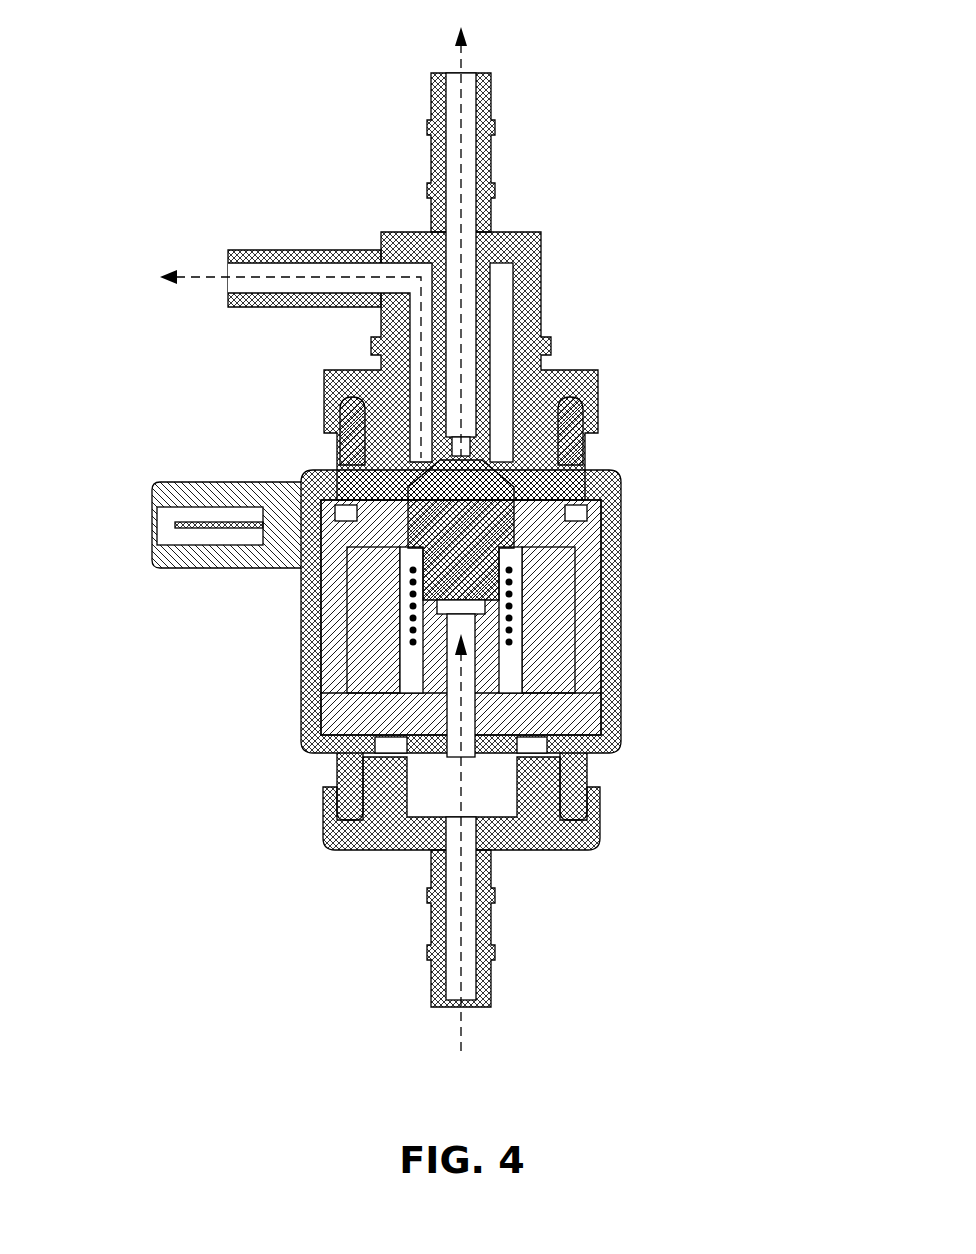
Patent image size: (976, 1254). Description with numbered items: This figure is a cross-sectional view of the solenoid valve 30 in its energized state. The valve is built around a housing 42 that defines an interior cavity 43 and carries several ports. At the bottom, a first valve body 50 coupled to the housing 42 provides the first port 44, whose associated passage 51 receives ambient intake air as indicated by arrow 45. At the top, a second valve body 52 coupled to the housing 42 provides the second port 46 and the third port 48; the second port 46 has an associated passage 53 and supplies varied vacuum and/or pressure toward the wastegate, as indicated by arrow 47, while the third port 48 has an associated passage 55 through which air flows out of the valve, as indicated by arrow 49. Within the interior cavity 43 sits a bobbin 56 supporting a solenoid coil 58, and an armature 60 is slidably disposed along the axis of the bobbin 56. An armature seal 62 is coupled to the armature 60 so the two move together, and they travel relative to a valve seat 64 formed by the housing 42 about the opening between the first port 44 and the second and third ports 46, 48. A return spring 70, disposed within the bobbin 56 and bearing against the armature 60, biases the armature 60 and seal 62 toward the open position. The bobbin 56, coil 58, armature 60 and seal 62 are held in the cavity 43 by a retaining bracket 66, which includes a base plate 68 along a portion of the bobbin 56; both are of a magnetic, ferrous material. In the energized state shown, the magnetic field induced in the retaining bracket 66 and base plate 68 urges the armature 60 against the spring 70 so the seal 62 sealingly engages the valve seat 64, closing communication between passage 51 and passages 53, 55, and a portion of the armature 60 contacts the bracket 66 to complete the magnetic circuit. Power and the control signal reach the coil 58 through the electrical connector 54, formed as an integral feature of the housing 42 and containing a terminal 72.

The solenoid valve 30 is at (129, 86).
The housing 42 is at (610, 663).
The interior cavity 43 is at (500, 598).
The first port 44 is at (430, 960).
The arrow 45 is at (491, 848).
The second port 46 is at (283, 249).
The arrow 47 is at (290, 354).
The third port 48 is at (497, 122).
The arrow 49 is at (475, 241).
The first valve body 50 is at (305, 860).
The passage 51 is at (472, 870).
The second valve body 52 is at (554, 282).
The passage 53 is at (285, 287).
The electrical connector 54 is at (182, 486).
The passage 55 is at (470, 167).
The bobbin 56 is at (360, 708).
The solenoid coil 58 is at (563, 607).
The armature 60 is at (430, 508).
The armature seal 62 is at (455, 485).
The valve seat 64 is at (450, 607).
The retaining bracket 66 is at (602, 523).
The base plate 68 is at (557, 503).
The return spring 70 is at (408, 580).
The terminal 72 is at (190, 526).